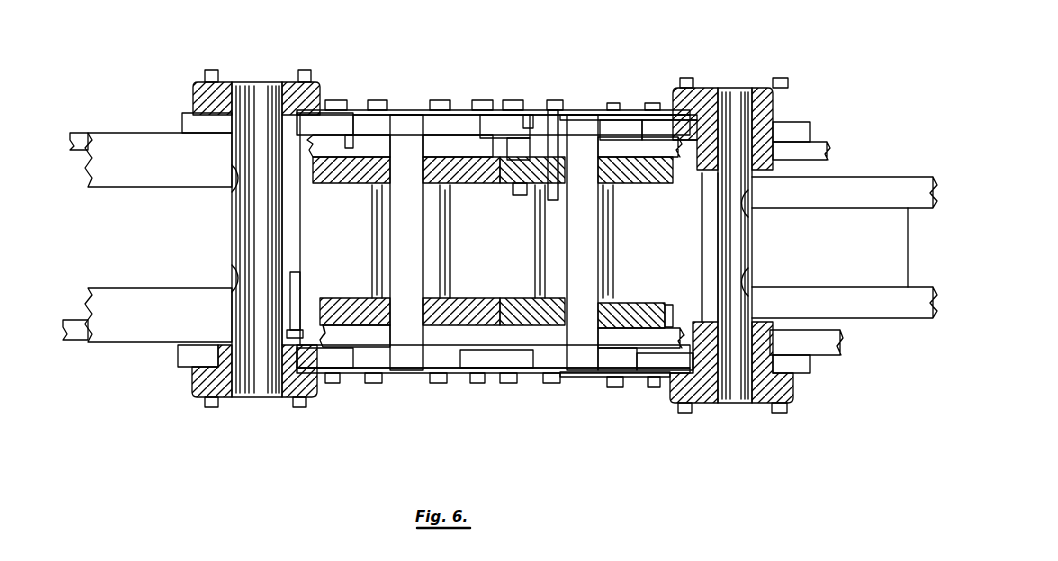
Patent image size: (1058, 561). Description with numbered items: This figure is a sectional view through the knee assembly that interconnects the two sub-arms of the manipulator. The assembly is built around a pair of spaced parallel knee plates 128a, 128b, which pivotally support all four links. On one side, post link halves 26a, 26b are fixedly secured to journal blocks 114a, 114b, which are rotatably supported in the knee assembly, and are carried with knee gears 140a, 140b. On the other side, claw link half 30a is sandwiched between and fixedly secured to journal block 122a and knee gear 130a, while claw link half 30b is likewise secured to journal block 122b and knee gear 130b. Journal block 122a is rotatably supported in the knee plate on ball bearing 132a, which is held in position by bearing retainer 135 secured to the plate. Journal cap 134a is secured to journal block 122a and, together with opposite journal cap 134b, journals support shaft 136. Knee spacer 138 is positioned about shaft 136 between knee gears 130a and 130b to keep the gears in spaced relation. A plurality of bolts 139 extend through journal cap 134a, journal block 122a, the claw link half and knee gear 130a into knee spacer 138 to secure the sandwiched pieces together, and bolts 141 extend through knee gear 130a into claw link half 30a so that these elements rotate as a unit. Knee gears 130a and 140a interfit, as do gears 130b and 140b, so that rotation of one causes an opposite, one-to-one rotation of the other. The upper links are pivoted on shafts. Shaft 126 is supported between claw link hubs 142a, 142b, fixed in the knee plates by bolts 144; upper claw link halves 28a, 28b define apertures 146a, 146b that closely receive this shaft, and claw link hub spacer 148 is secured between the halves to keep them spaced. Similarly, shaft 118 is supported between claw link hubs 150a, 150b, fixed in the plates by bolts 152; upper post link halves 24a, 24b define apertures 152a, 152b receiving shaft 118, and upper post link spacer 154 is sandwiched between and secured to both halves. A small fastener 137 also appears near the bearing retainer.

The upper post link half 24a is at (150, 175).
The upper post link half 24b is at (118, 300).
The post link half 26a is at (78, 135).
The post link half 26b is at (72, 343).
The upper claw link half 28a is at (926, 152).
The upper claw link half 28b is at (918, 290).
The claw link half 30a is at (650, 166).
The claw link half 30b is at (625, 312).
The journal block 114a is at (378, 125).
The journal block 114b is at (362, 362).
The shaft 118 is at (268, 304).
The journal block 122a is at (617, 125).
The journal block 122b is at (622, 358).
The shaft 126 is at (735, 240).
The knee plate 128a is at (187, 118).
The knee plate 128b is at (190, 365).
The knee gear 130a is at (612, 166).
The knee gear 130b is at (612, 345).
The ball bearing 132a is at (558, 108).
The journal cap 134a is at (585, 112).
The journal cap 134b is at (568, 376).
The bearing retainer 135 is at (540, 120).
The support shaft 136 is at (613, 256).
The bolt 137 is at (530, 112).
The knee spacer 138 is at (548, 238).
The bolts 139 is at (556, 118).
The knee gear 140a is at (440, 160).
The knee gear 140b is at (400, 300).
The bolts 141 is at (520, 196).
The claw link hub 142a is at (757, 92).
The claw link hub 142b is at (758, 393).
The bolts 144 is at (688, 80).
The aperture 146a is at (750, 210).
The aperture 146b is at (750, 282).
The claw link hub spacer 148 is at (886, 256).
The claw link hub 150a is at (220, 88).
The claw link hub 150b is at (216, 398).
The bolts 152 is at (210, 410).
The aperture 152a is at (235, 197).
The aperture 152b is at (235, 278).
The upper post link spacer 154 is at (302, 240).